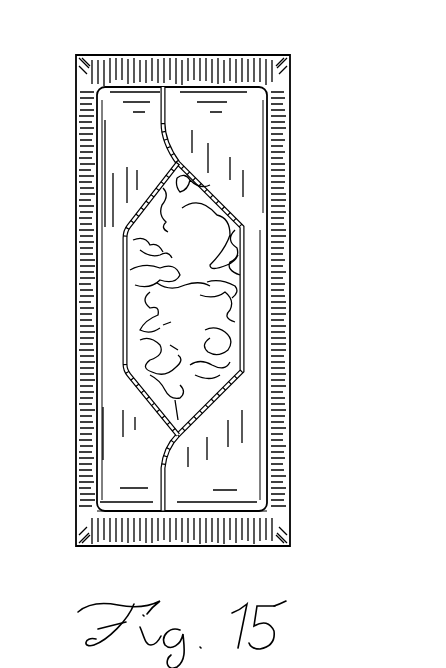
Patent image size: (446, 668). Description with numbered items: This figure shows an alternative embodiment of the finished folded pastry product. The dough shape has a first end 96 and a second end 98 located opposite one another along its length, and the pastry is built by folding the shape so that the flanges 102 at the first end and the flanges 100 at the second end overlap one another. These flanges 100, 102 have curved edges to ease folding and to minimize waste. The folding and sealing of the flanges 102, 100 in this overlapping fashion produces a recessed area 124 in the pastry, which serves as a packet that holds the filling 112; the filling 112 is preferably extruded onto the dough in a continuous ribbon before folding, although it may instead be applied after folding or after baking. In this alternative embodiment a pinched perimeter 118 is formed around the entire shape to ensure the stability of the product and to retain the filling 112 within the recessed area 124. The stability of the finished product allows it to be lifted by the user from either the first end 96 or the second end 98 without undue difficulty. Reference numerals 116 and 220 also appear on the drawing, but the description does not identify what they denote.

The first end 96 is at (240, 55).
The second end 98 is at (258, 547).
The flanges 100 is at (220, 531).
The flanges 102 is at (184, 13).
The filling 112 is at (212, 278).
The fastener 116 is at (163, 147).
The pinched perimeter 118 is at (288, 525).
The recessed area 124 is at (245, 226).
The ruffle 220 is at (290, 134).